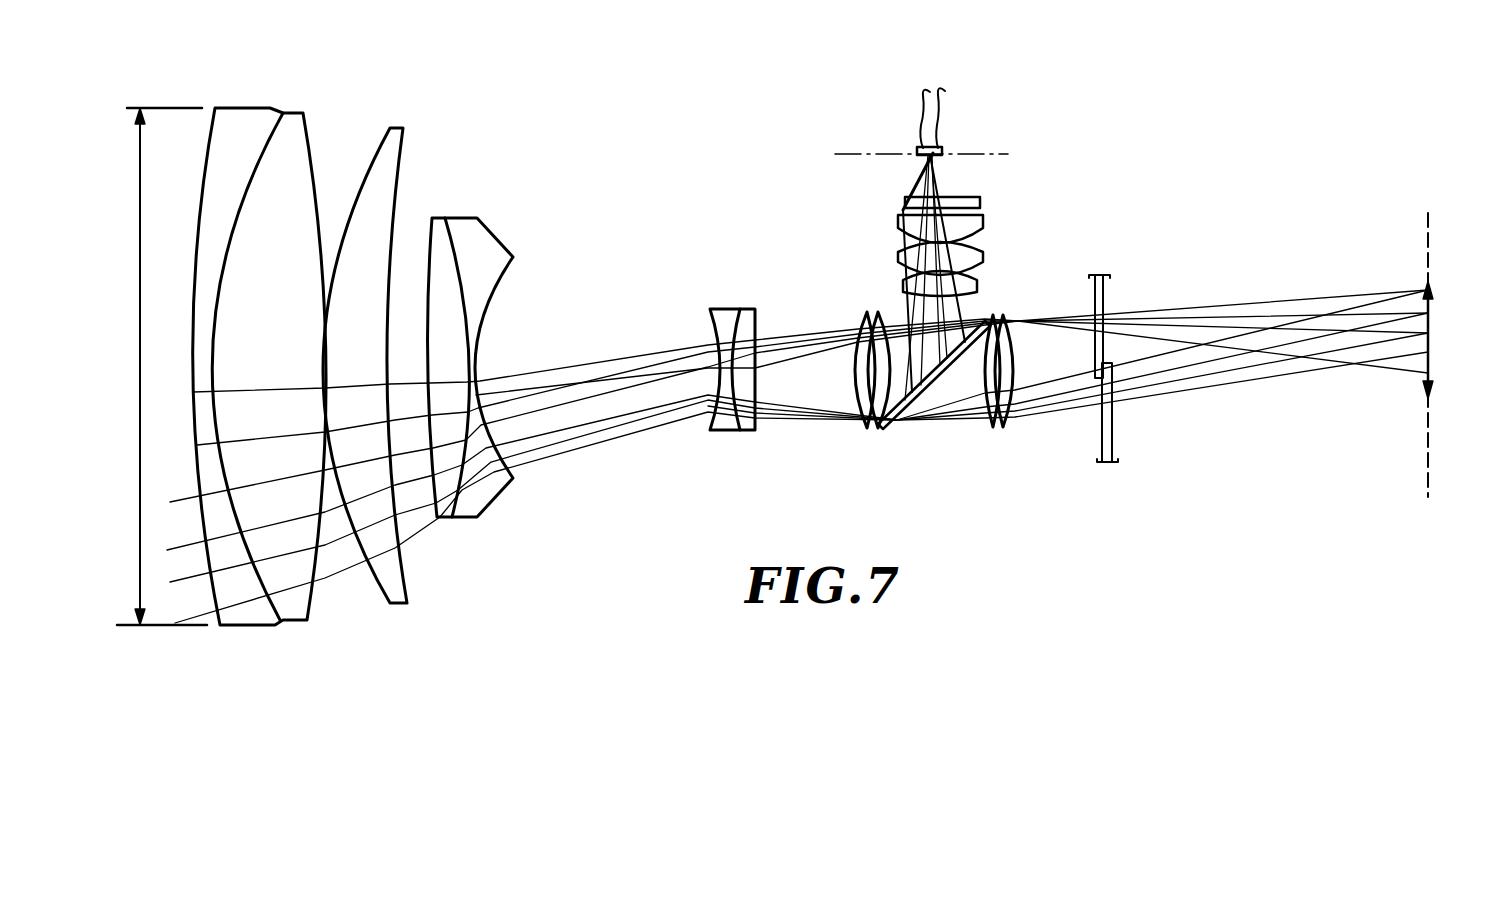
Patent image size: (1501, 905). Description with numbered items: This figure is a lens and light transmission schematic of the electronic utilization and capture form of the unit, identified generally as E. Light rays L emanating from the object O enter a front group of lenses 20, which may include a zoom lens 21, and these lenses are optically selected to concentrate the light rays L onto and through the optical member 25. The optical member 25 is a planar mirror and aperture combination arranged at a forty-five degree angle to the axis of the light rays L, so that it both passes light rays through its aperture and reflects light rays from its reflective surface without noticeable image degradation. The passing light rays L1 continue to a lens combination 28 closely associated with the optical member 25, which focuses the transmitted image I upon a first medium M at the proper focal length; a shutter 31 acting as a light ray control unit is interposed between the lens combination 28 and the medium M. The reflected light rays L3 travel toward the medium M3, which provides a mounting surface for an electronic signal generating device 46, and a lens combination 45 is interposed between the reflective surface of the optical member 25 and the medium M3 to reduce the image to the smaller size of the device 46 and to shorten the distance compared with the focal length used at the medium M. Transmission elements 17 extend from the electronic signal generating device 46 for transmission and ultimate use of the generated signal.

The zoom lens 21 is at (325, 108).
The front group of lenses 20 is at (445, 175).
The object O is at (140, 323).
The light rays L is at (608, 450).
The optical member 25 is at (902, 428).
The lens combination 28 is at (992, 430).
The shutter 31 is at (1108, 296).
The passing light rays L1 is at (1236, 398).
The first medium M is at (1425, 437).
The image I is at (1432, 341).
The electronic utilization and capture system E is at (1082, 177).
The transmission elements 17 is at (920, 107).
The electronic signal generating device 46 is at (940, 146).
The reflected light rays for electronic generation L3 is at (905, 178).
The medium M3 is at (998, 156).
The lens combination 45 is at (995, 237).